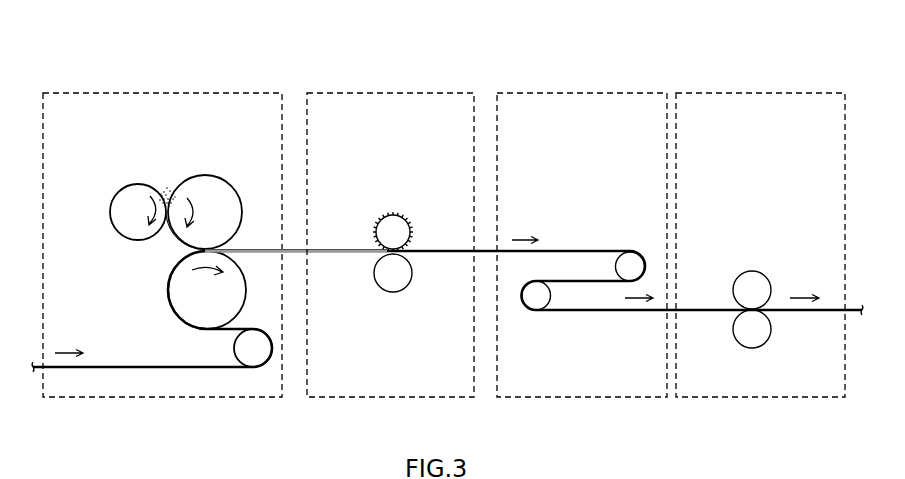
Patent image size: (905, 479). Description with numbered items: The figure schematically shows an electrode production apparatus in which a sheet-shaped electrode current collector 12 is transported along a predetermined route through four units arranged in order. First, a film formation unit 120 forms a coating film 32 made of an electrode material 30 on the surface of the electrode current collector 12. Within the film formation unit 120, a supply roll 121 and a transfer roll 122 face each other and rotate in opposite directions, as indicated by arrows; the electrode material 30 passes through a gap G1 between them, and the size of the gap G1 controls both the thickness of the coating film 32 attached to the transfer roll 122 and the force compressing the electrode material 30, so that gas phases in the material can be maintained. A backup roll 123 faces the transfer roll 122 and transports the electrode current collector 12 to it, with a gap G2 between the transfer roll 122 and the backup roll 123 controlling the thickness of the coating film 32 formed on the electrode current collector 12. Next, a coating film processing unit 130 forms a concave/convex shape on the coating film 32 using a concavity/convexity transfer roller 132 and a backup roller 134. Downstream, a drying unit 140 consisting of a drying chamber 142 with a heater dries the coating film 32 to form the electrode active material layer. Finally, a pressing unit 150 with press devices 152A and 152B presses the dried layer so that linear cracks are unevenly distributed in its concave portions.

The electrode current collector 12 is at (118, 370).
The electrode material 30 is at (168, 191).
The coating film 32 is at (266, 249).
The film formation unit 120 is at (241, 93).
The supply roll 121 is at (116, 192).
The transfer roll 122 is at (228, 184).
The backup roll 123 is at (178, 312).
The gap G1 is at (162, 242).
The gap G2 is at (180, 262).
The coating film processing unit 130 is at (421, 93).
The concavity/convexity transfer roller 132 is at (383, 213).
The backup roller 134 is at (395, 292).
The drying unit 140 is at (600, 93).
The drying chamber 142 is at (583, 281).
The pressing unit 150 is at (760, 93).
The press device 152A is at (762, 274).
The press device 152B is at (762, 346).